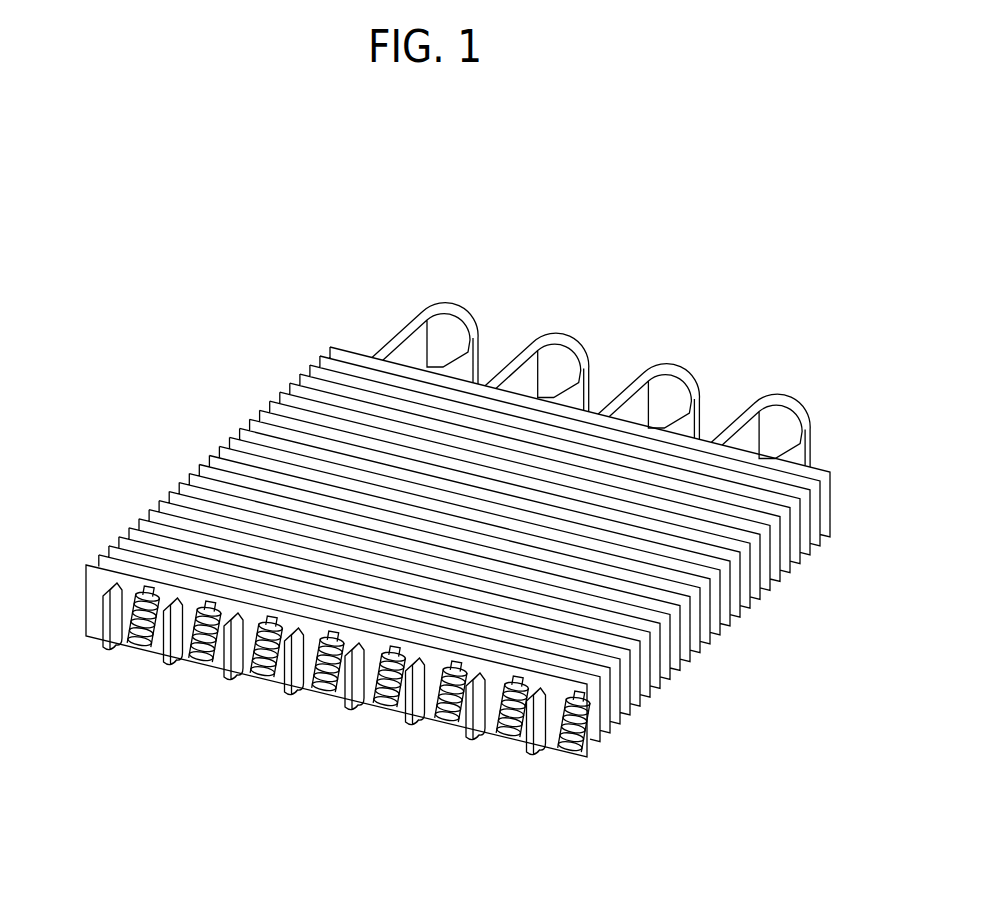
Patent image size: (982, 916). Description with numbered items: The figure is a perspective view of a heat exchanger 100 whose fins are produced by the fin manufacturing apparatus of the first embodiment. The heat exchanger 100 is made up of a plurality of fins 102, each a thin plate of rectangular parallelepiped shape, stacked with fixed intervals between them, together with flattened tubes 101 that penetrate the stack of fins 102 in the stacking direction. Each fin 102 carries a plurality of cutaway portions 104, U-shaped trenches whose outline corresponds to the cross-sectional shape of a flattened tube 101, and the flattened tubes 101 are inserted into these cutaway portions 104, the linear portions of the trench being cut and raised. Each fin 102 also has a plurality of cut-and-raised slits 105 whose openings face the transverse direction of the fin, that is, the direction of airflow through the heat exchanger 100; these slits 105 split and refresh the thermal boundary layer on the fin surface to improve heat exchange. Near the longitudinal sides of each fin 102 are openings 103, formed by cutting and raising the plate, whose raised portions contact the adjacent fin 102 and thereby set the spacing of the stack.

The heat exchanger 100 is at (632, 282).
The flattened tubes 101 is at (390, 341).
The fins 102 is at (86, 577).
The openings 103 is at (137, 652).
The cutaway portions 104 is at (197, 660).
The cut-and-raised slits 105 is at (267, 677).